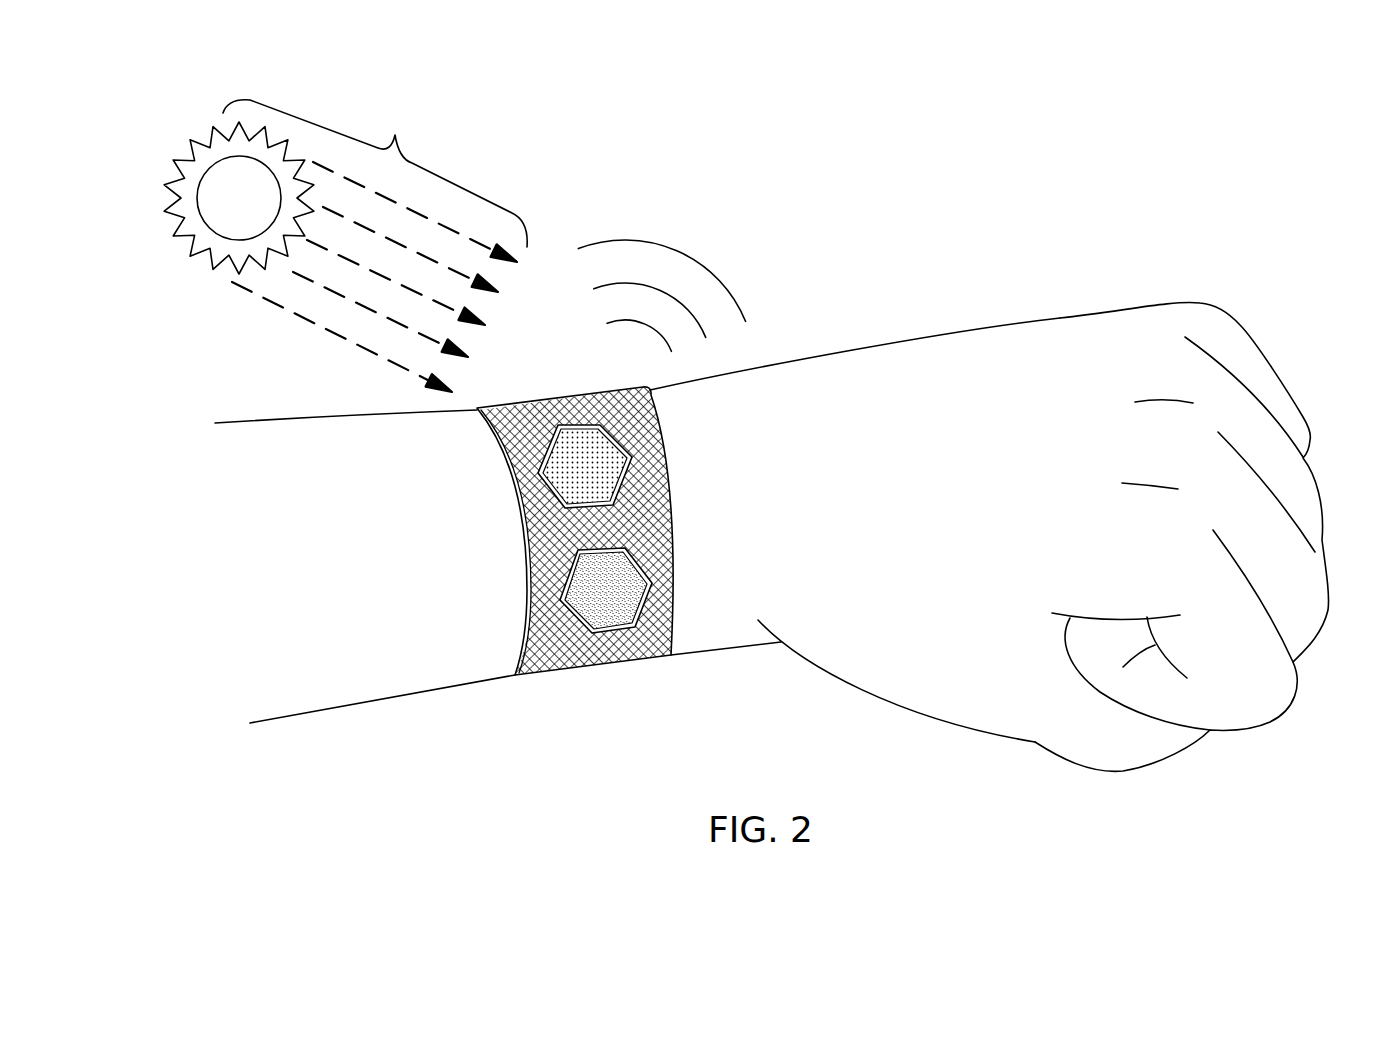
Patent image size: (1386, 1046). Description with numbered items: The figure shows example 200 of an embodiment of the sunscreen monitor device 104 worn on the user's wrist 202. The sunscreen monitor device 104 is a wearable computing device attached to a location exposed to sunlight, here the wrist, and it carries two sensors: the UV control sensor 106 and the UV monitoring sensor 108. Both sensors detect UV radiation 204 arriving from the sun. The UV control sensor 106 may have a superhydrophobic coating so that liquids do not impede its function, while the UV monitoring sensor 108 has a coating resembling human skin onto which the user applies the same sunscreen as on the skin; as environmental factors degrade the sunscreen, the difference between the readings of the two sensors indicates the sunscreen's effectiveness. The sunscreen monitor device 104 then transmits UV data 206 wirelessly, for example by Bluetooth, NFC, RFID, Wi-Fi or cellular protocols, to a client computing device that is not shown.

The example 200 is at (772, 433).
The user's wrist 202 is at (338, 673).
The UV radiation 204 is at (395, 135).
The UV data 206 is at (710, 277).
The sunscreen monitor device 104 is at (545, 668).
The UV control sensor 106 is at (608, 632).
The UV monitoring sensor 108 is at (578, 420).